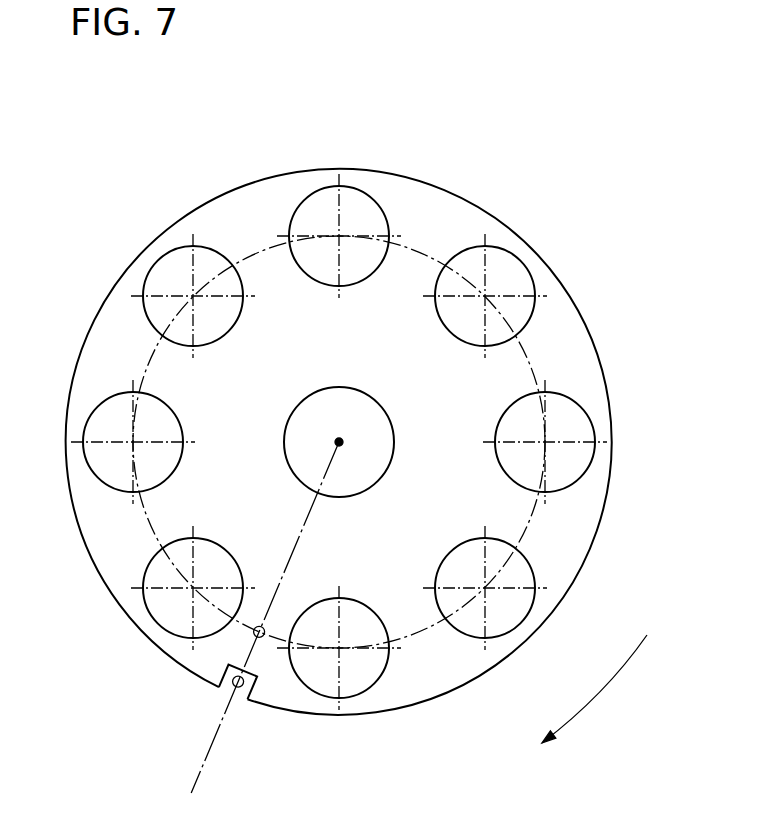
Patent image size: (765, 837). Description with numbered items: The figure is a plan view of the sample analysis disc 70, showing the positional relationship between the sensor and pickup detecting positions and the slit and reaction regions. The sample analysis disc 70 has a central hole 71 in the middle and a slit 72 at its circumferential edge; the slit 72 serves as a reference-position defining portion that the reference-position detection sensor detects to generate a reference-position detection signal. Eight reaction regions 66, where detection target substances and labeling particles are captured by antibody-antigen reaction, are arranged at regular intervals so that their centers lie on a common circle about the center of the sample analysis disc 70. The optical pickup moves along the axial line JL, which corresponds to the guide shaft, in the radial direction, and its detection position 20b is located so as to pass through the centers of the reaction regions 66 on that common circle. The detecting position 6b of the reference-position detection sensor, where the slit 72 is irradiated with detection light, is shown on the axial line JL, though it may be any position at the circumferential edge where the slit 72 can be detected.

The sample analysis disc 70 is at (430, 182).
The reaction regions 66 is at (298, 210).
The central hole 71 is at (378, 400).
The slit 72 is at (253, 702).
The axial line JL is at (300, 543).
The detection position 20b is at (259, 626).
The detecting position 6b is at (232, 685).